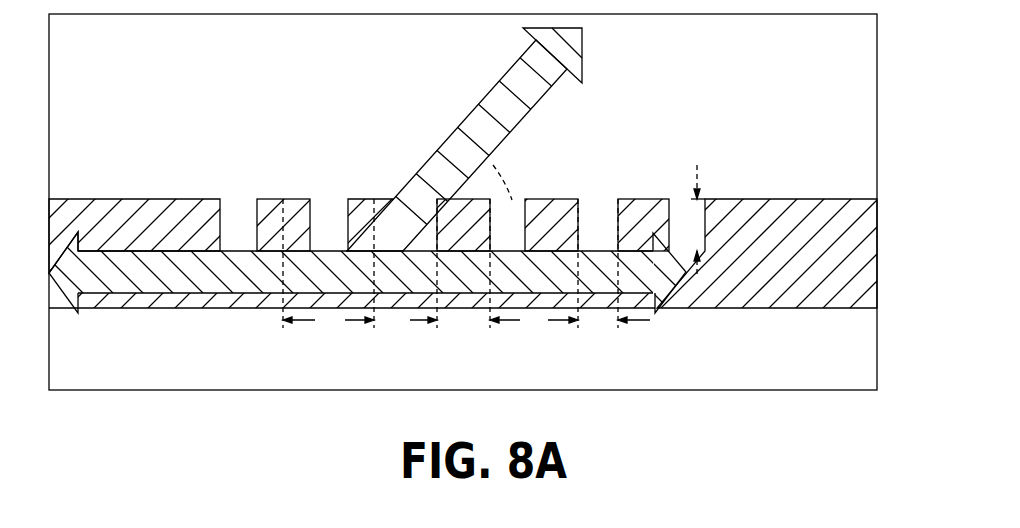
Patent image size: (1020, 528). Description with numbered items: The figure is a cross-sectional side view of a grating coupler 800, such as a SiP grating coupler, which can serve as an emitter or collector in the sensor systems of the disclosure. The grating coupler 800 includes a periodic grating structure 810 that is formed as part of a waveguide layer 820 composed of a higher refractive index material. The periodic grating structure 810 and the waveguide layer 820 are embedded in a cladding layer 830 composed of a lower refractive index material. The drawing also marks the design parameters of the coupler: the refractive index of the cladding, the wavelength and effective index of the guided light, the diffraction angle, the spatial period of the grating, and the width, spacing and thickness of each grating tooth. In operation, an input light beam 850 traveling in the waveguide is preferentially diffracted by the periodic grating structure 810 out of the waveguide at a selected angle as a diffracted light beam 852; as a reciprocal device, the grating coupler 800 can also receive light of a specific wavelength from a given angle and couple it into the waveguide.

The grating coupler 800 is at (502, 228).
The periodic grating structure 810 is at (378, 250).
The waveguide layer 820 is at (102, 210).
The cladding layer 830 is at (735, 363).
The input light beam 850 is at (190, 293).
The diffracted light beam 852 is at (490, 93).